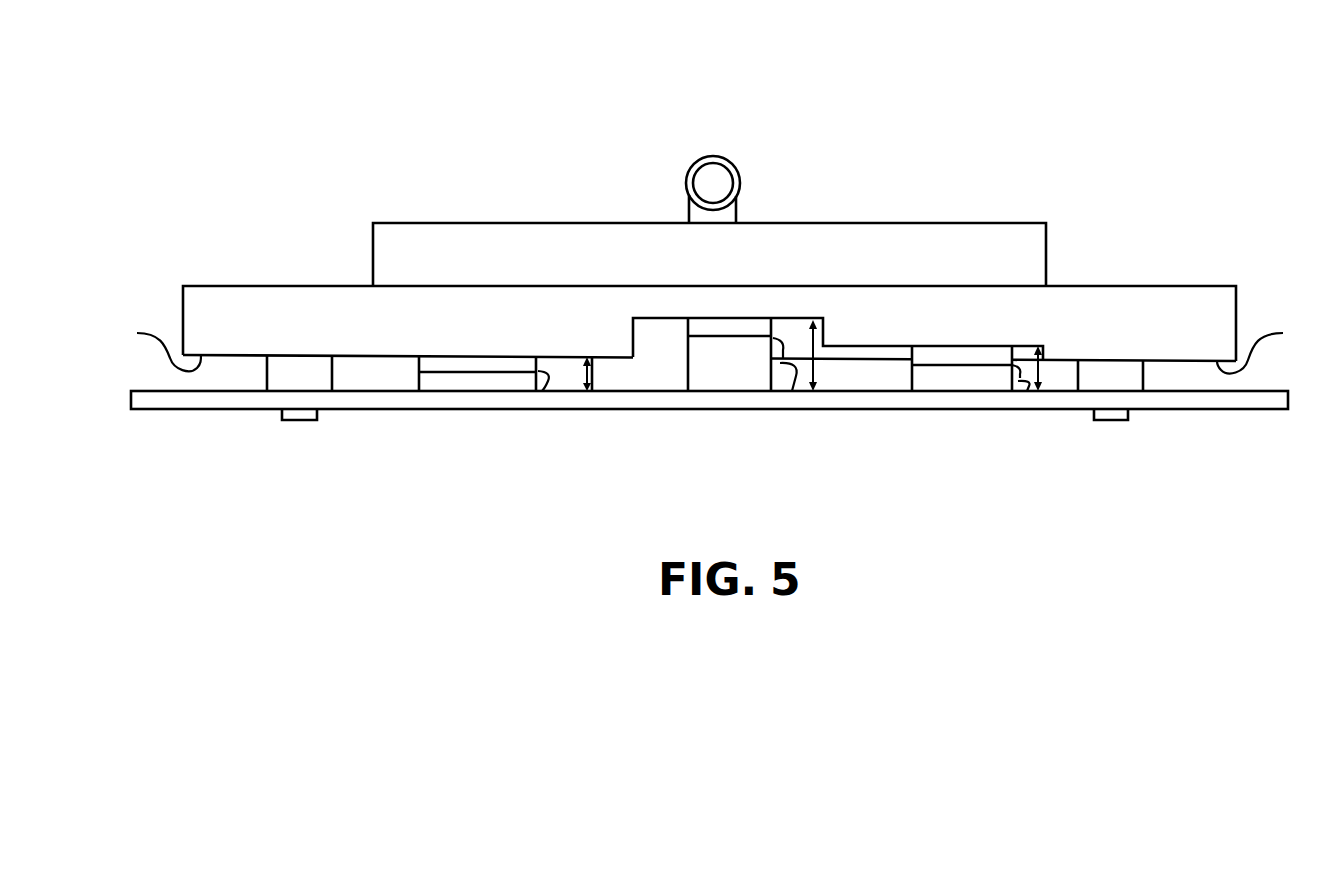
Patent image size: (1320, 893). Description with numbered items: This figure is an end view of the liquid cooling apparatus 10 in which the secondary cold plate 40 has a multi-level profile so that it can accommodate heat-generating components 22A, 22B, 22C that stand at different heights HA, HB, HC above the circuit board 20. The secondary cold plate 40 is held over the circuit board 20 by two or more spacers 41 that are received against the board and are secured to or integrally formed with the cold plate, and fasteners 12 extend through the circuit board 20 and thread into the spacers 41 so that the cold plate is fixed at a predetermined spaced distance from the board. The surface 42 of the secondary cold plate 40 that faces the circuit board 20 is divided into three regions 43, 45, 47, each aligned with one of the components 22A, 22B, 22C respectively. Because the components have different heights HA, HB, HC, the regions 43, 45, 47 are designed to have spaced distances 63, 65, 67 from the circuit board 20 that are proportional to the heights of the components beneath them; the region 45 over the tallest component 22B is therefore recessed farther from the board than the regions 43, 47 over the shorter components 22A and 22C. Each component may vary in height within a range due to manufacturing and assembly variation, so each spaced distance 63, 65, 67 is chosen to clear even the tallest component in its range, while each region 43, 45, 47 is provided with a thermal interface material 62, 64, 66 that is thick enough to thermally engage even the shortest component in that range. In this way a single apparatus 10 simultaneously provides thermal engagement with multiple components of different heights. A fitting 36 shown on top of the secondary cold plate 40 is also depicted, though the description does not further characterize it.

The liquid cooling apparatus 10 is at (342, 121).
The fastener 12 is at (302, 420).
The circuit board 20 is at (175, 409).
The component 22A is at (475, 391).
The component 22B is at (740, 378).
The component 22C is at (958, 378).
The thermal interface / heat pipe 36 is at (713, 156).
The secondary cold plate 40 is at (272, 286).
The spacer 41 is at (266, 375).
The first surface 42 is at (710, 345).
The region 43 is at (525, 376).
The region 45 is at (817, 370).
The region 47 is at (1023, 371).
The thermal interface material 62 is at (505, 360).
The spaced distance 63 is at (593, 372).
The thermal interface material 64 is at (748, 327).
The spaced distance 65 is at (813, 362).
The thermal interface material 66 is at (977, 357).
The spaced distance 67 is at (1043, 368).
The height HA is at (544, 378).
The height HB is at (797, 368).
The height HC is at (1028, 380).